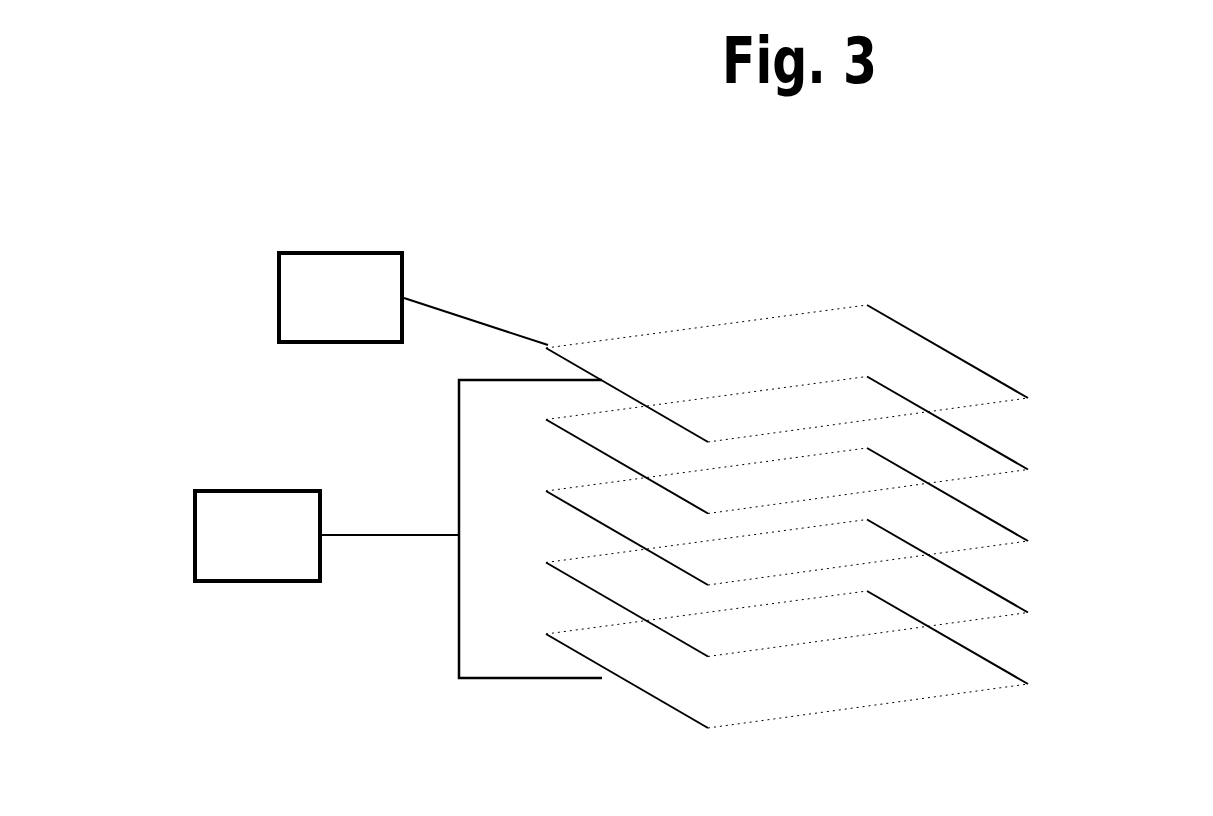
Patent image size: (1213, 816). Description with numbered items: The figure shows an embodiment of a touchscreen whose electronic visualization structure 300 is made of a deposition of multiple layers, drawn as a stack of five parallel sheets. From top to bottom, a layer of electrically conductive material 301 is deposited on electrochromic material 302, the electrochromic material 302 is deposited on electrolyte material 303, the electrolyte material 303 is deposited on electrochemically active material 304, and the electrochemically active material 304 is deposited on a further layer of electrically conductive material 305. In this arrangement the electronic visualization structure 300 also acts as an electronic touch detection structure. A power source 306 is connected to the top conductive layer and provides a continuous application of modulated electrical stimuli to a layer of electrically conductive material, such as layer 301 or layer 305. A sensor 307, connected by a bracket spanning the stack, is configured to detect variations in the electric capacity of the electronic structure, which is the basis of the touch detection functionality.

The electronic visualization structure 300 is at (975, 212).
The layer of electrically conductive material 301 is at (987, 390).
The electrochromic material 302 is at (988, 465).
The electrolyte material 303 is at (997, 535).
The electrochemically active material 304 is at (987, 605).
The electrically conductive material 305 is at (990, 677).
The power source 306 is at (403, 252).
The sensor 307 is at (230, 489).